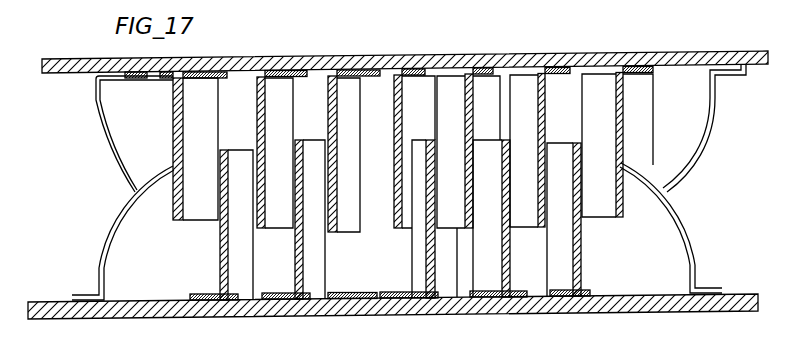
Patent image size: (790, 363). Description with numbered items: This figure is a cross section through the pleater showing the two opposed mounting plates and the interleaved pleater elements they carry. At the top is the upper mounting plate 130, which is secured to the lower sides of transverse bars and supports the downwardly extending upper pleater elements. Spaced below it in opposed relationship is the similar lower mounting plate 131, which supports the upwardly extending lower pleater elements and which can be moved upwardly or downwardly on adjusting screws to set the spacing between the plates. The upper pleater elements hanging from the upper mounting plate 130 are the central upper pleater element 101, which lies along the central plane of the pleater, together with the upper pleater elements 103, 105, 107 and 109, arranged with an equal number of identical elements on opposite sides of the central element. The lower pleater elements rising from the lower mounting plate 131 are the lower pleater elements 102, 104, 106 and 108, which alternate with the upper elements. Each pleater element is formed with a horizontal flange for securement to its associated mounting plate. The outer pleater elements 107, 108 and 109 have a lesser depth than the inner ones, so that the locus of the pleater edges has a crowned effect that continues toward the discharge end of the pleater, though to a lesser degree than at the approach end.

The upper mounting plate 130 is at (83, 61).
The lower mounting plate 131 is at (117, 314).
The central upper pleater element 101 is at (396, 95).
The lower pleater element 102 is at (433, 278).
The upper pleater element 103 is at (328, 112).
The lower pleater element 104 is at (303, 288).
The upper pleater element 105 is at (258, 102).
The lower pleater element 106 is at (228, 292).
The upper pleater element 107 is at (174, 90).
The lower pleater element 108 is at (127, 240).
The upper pleater element 109 is at (122, 113).